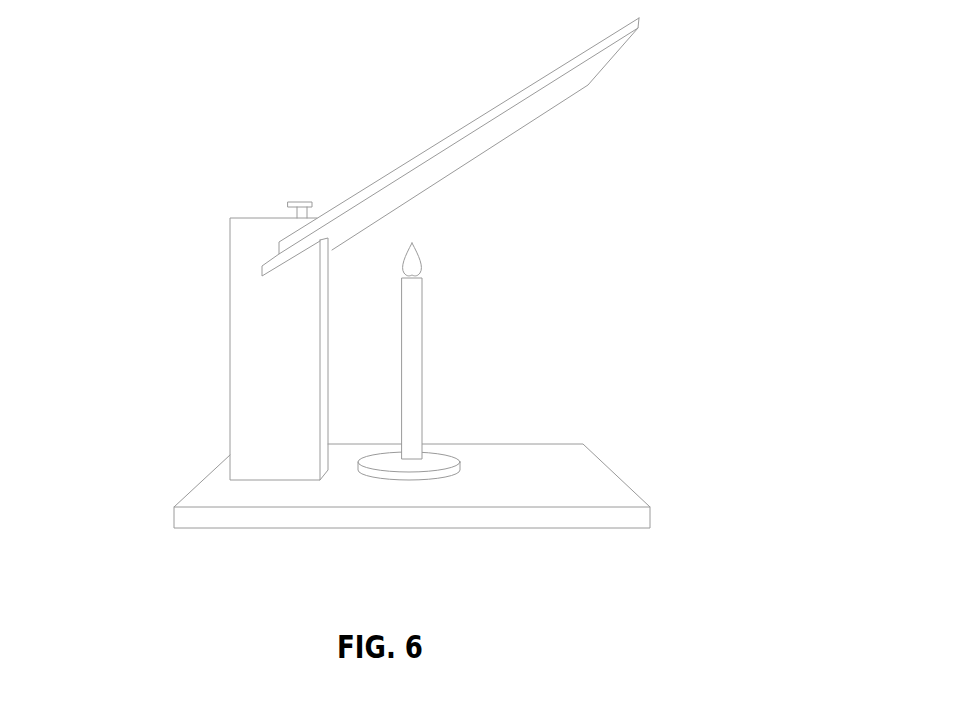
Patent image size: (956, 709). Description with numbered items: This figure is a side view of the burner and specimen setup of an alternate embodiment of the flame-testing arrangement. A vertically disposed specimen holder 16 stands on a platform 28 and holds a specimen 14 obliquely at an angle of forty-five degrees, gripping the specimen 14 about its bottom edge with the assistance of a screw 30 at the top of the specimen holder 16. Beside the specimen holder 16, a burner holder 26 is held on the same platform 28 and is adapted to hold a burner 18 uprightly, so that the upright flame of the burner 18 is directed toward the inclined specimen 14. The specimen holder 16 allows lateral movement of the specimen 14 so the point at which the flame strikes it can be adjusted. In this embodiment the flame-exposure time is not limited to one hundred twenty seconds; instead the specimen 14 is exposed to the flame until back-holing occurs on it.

The specimen 14 is at (557, 92).
The specimen holder 16 is at (252, 352).
The burner 18 is at (412, 337).
The burner holder 26 is at (430, 473).
The platform 28 is at (202, 518).
The screw 30 is at (288, 203).